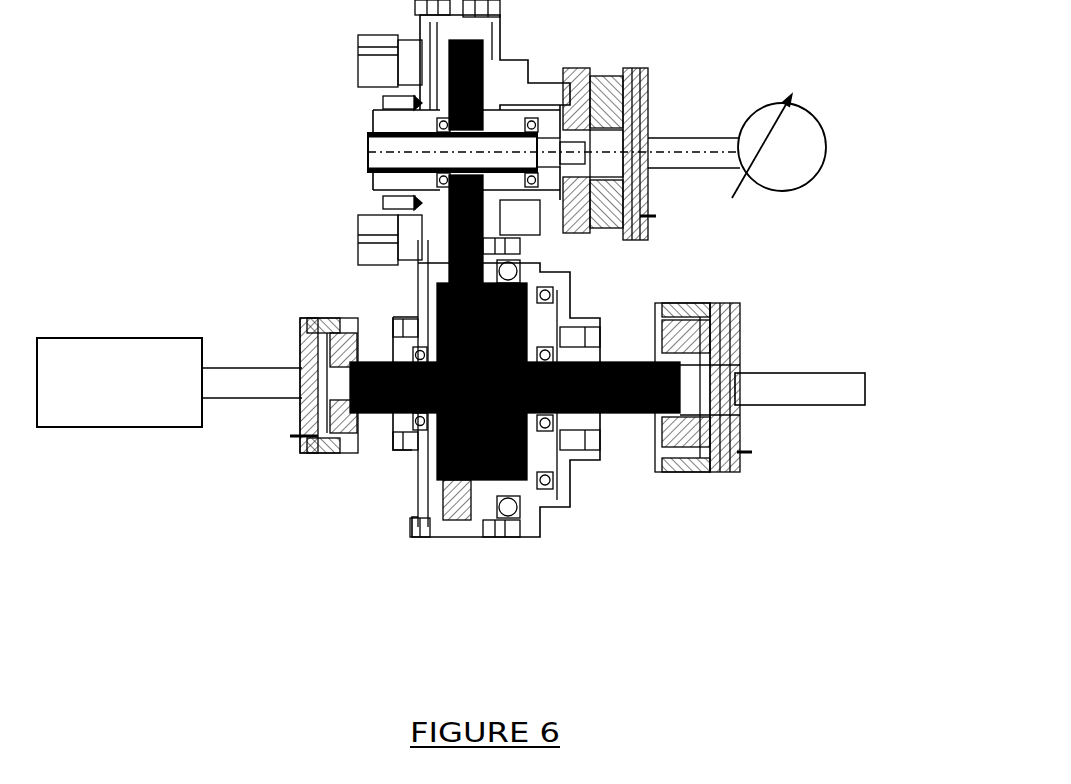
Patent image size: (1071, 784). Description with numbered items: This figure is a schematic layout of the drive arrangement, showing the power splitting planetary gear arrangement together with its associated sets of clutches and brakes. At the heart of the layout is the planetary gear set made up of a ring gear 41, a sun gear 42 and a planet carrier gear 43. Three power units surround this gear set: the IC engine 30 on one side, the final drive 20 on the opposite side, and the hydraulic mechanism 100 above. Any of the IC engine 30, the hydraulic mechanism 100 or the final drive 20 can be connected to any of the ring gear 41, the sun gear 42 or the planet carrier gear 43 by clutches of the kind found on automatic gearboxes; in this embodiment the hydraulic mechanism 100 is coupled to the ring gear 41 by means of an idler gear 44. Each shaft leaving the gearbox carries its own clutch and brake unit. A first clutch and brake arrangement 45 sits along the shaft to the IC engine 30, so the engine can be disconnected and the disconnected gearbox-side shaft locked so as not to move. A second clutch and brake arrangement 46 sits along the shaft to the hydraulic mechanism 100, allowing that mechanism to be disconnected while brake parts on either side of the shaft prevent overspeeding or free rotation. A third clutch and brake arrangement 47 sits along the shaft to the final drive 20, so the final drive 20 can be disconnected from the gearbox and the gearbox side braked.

The final drive 20 is at (791, 388).
The IC engine 30 is at (113, 410).
The ring gear 41 is at (445, 286).
The sun gear 42 is at (438, 455).
The planet carrier gear 43 is at (522, 497).
The idler gear 44 is at (452, 226).
The first clutch and brake arrangement 45 is at (300, 462).
The second clutch and brake arrangement 46 is at (636, 62).
The third clutch and brake arrangement 47 is at (717, 480).
The hydraulic mechanism 100 is at (810, 155).